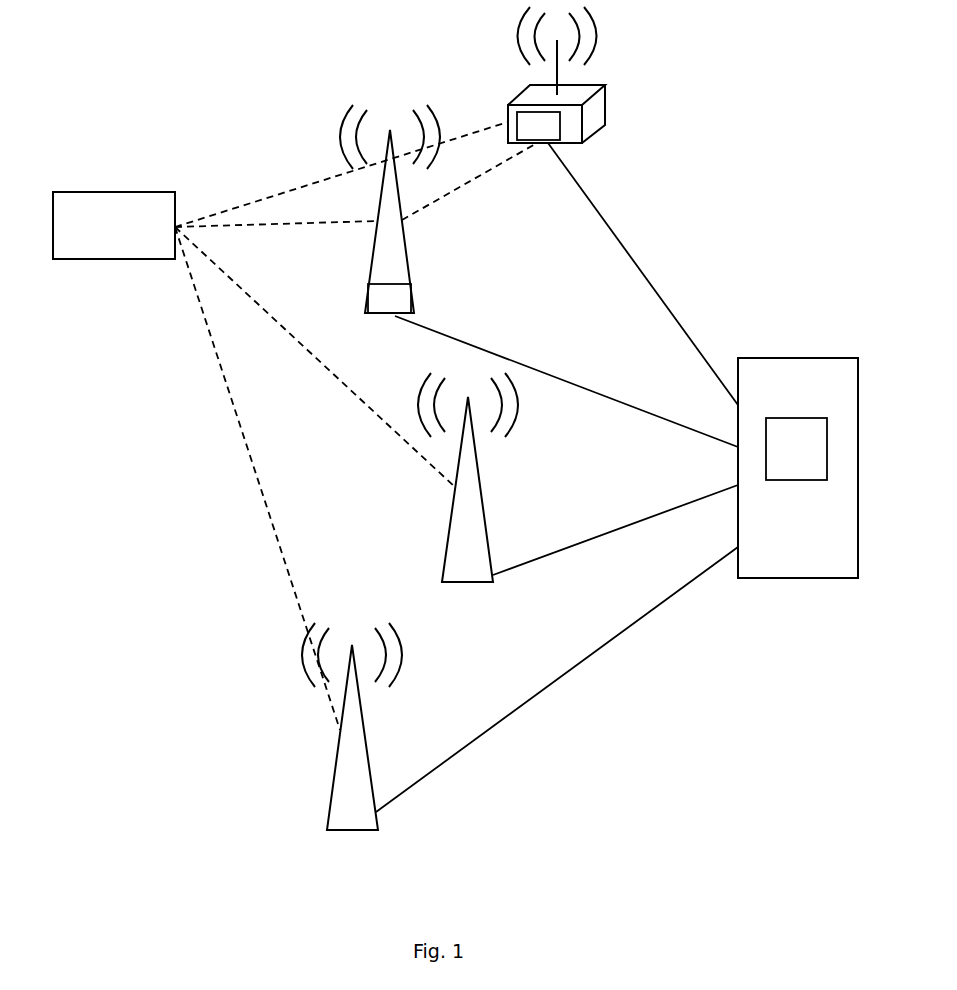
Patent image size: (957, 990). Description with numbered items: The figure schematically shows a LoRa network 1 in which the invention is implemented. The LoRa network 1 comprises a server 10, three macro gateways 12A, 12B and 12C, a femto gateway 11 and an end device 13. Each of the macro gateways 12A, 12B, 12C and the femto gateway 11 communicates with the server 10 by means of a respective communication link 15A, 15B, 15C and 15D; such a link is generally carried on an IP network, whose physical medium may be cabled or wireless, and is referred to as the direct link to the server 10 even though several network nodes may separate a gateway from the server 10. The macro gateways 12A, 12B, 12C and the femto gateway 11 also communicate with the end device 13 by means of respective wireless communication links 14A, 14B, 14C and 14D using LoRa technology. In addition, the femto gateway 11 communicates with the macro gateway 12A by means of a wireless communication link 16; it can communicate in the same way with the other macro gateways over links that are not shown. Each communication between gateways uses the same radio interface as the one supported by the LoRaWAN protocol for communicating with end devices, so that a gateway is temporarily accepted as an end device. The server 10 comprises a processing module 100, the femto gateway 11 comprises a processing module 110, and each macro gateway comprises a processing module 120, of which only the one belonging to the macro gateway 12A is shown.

The LoRa network 1 is at (735, 141).
The server 10 is at (808, 360).
The processing module 100 is at (814, 466).
The femto gateway 11 is at (605, 103).
The processing module 110 is at (556, 137).
The macro gateway 12A is at (408, 254).
The macro gateway 12B is at (484, 515).
The macro gateway 12C is at (368, 752).
The processing module 120 is at (407, 312).
The end device 13 is at (110, 192).
The wireless communication link 14A is at (340, 219).
The wireless communication link 14B is at (291, 332).
The wireless communication link 14C is at (262, 487).
The wireless communication link 14D is at (255, 196).
The communication link 15A is at (599, 394).
The communication link 15B is at (631, 529).
The communication link 15C is at (564, 672).
The communication link 15D is at (625, 244).
The wireless communication link 16 is at (462, 190).